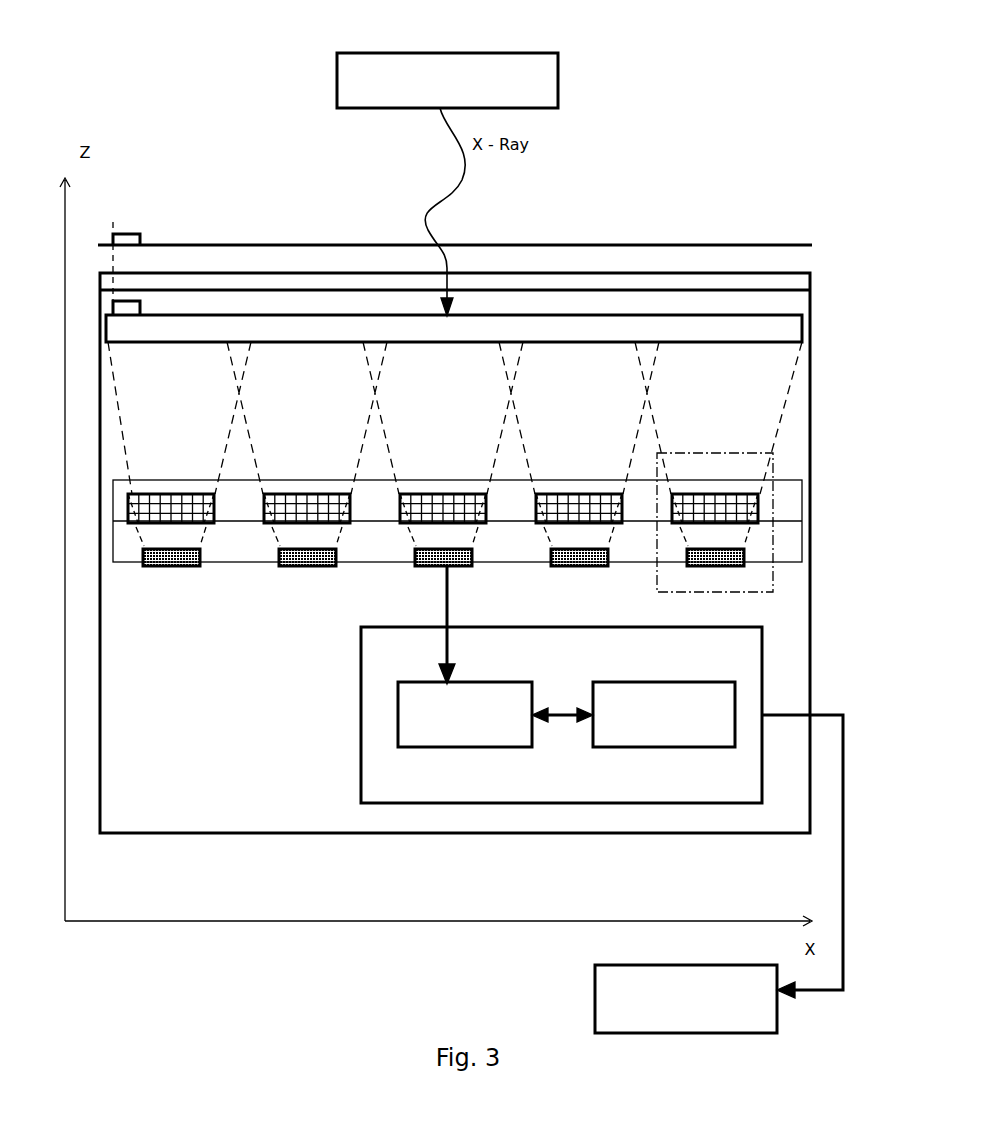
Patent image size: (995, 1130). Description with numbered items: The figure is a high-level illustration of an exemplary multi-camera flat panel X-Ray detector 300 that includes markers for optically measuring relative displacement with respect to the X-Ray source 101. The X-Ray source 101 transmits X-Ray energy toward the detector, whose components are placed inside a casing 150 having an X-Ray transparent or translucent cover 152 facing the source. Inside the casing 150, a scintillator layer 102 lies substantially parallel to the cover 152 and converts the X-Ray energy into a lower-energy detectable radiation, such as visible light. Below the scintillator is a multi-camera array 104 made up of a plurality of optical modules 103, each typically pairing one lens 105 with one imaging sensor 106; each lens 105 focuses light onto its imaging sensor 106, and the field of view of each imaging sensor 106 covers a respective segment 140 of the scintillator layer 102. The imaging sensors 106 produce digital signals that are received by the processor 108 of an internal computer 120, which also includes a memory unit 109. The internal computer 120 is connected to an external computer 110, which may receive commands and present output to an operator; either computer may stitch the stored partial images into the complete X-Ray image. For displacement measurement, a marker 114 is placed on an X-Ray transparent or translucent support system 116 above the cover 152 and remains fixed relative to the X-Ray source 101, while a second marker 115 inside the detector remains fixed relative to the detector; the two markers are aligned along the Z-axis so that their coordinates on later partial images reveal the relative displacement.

The X-Ray source 101 is at (560, 92).
The scintillator layer 102 is at (680, 330).
The optical module 103 is at (683, 453).
The multi-camera array 104 is at (457, 521).
The lens 105 is at (422, 493).
The imaging sensor 106 is at (327, 566).
The processor 108 is at (500, 682).
The memory unit 109 is at (667, 682).
The external computer 110 is at (677, 965).
The marker 114 is at (140, 233).
The second marker 115 is at (128, 308).
The support system 116 is at (262, 245).
The internal computer 120 is at (522, 627).
The segment 140 is at (293, 342).
The casing 150 is at (487, 833).
The cover 152 is at (665, 273).
The multi-camera flat panel X-Ray detector 300 is at (455, 557).